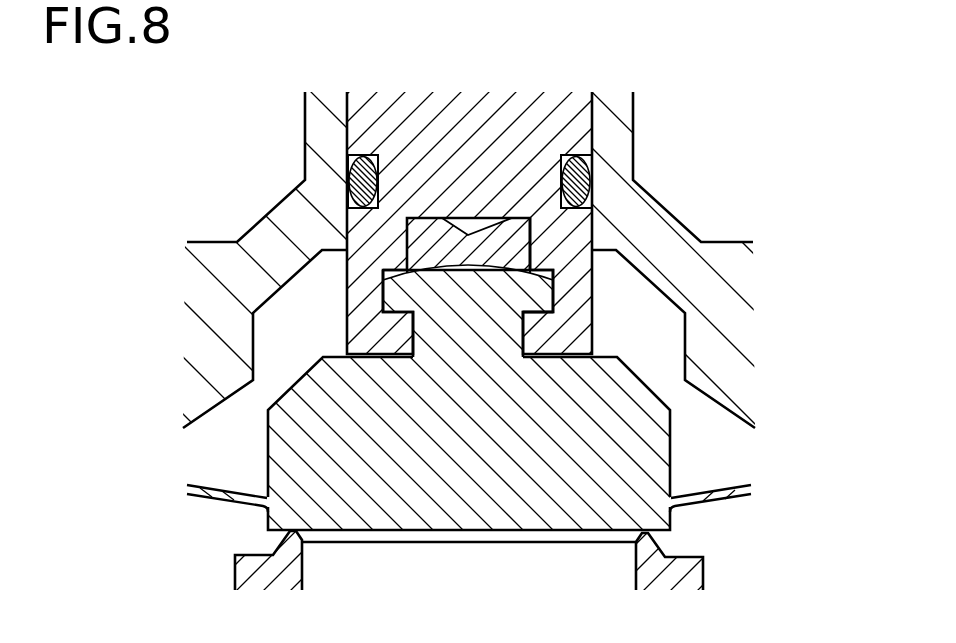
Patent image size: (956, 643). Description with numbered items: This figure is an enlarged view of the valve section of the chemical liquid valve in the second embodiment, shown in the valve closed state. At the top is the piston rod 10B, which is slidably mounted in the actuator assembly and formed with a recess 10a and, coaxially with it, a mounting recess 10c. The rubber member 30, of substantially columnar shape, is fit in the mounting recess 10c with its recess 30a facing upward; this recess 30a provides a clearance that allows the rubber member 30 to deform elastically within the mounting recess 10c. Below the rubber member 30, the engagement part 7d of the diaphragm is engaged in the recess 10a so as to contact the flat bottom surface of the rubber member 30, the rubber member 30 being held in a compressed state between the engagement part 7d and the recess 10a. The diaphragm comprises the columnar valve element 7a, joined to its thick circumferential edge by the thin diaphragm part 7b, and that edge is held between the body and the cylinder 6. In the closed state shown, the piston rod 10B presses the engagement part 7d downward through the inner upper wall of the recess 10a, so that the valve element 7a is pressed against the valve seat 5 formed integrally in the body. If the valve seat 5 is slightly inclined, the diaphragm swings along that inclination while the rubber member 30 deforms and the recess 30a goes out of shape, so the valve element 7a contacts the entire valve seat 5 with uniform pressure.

The piston rod 10B is at (515, 122).
The recess 10a is at (556, 312).
The mounting recess 10c is at (530, 252).
The rubber member 30 is at (428, 245).
The recess 30a is at (462, 217).
The cylinder 6 is at (210, 258).
The valve element 7a is at (285, 442).
The diaphragm part 7b is at (223, 498).
The engagement part 7d is at (383, 280).
The valve seat 5 is at (643, 543).